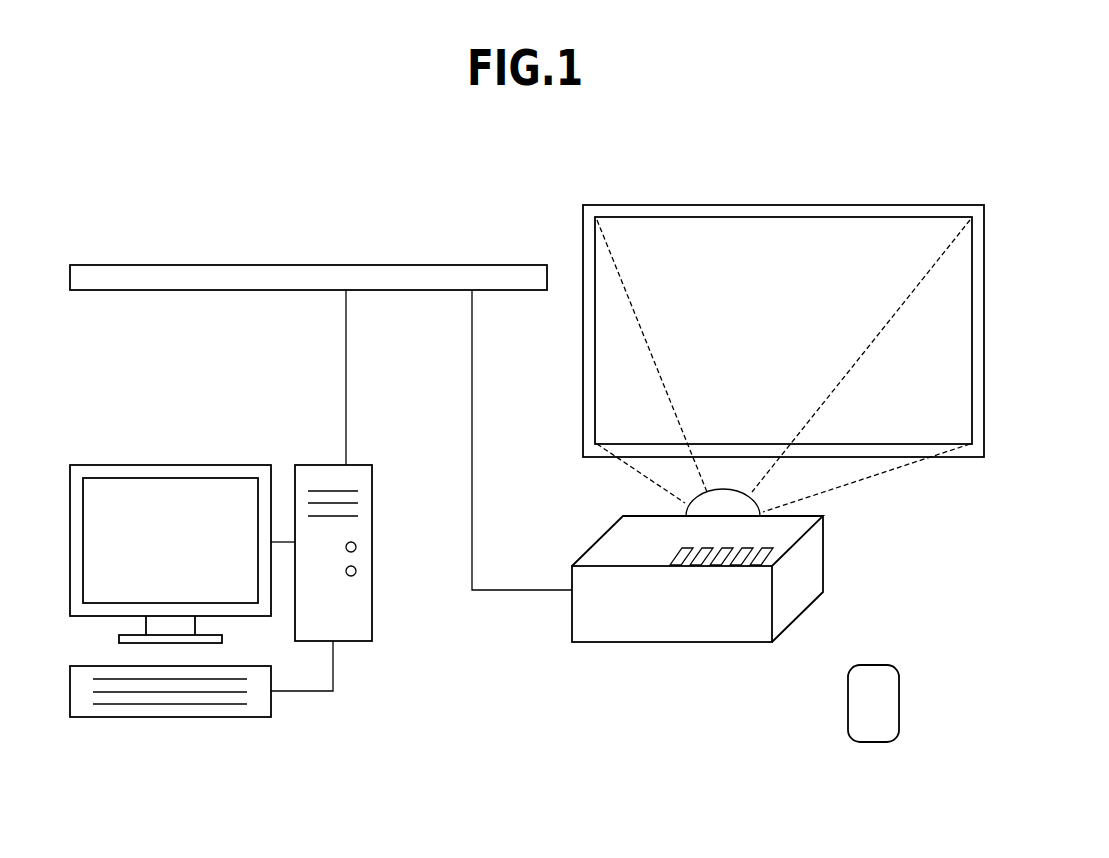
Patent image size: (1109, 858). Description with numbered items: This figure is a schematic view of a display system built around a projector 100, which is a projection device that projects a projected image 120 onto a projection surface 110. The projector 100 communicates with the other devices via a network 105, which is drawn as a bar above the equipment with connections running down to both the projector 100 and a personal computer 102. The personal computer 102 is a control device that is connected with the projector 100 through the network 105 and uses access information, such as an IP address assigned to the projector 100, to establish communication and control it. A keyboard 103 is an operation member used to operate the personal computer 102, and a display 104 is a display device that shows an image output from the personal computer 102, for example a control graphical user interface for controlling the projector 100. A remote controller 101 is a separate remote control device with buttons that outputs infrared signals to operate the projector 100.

The projector 100 is at (667, 642).
The remote controller 101 is at (870, 742).
The personal computer 102 is at (372, 613).
The keyboard 103 is at (175, 717).
The display 104 is at (163, 465).
The network 105 is at (248, 265).
The projection surface 110 is at (788, 204).
The projected image 120 is at (672, 216).